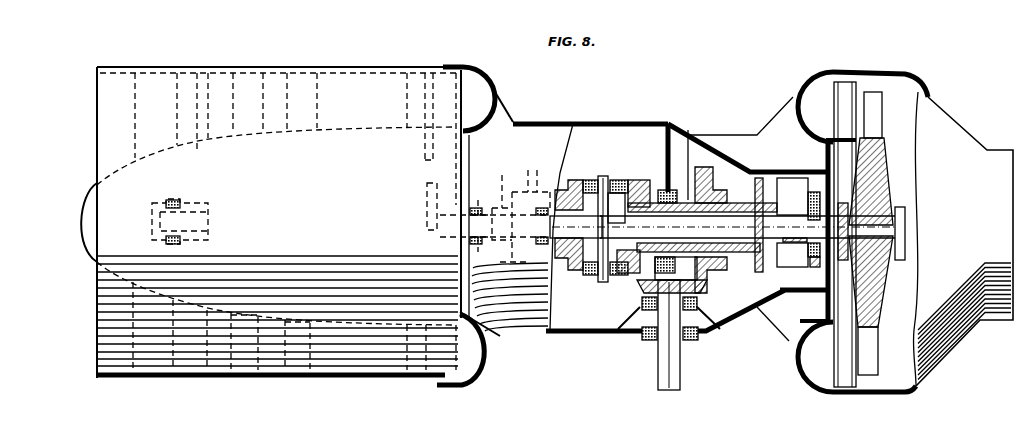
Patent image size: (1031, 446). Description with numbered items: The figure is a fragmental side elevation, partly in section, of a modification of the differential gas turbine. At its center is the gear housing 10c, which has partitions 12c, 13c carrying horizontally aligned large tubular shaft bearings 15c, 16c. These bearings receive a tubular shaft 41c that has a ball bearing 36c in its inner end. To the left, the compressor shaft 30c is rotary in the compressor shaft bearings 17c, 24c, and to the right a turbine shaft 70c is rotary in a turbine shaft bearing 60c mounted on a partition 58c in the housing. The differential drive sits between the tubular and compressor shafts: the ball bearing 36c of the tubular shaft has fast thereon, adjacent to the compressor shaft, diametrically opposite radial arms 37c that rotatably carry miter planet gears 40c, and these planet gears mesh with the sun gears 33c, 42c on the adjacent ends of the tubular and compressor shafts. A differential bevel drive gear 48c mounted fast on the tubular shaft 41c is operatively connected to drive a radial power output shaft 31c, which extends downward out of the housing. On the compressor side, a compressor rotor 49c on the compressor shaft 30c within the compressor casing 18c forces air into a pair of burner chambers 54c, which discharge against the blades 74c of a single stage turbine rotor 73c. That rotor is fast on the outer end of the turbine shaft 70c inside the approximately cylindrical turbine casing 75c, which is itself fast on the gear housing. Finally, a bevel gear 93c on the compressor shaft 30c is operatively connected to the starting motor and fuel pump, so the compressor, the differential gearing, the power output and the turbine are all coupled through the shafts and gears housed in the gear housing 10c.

The gear housing 10c is at (656, 122).
The partition 12c is at (665, 149).
The partition 13c is at (757, 184).
The tubular shaft bearing 15c is at (658, 190).
The tubular shaft bearing 16c is at (772, 197).
The compressor shaft bearing 17c is at (478, 205).
The outer casing 18c is at (266, 378).
The compressor shaft bearing 24c is at (171, 201).
The compressor shaft 30c is at (479, 242).
The radial power output shaft 31c is at (657, 382).
The sun gear 33c is at (566, 284).
The ball bearing 36c is at (653, 228).
The radial arms 37c is at (602, 175).
The miter planet gears 40c is at (580, 180).
The tubular shaft 41c is at (710, 292).
The sun gear 42c is at (636, 183).
The differential bevel drive gear 48c is at (706, 298).
The compressor rotor 49c is at (269, 130).
The burner chambers 54c is at (722, 135).
The partition 58c is at (810, 180).
The turbine shaft bearing 60c is at (811, 266).
The turbine shaft 70c is at (792, 244).
The turbine rotor 73c is at (883, 163).
The blades 74c is at (870, 345).
The turbine casing 75c is at (900, 75).
The bevel gear 93c is at (500, 186).